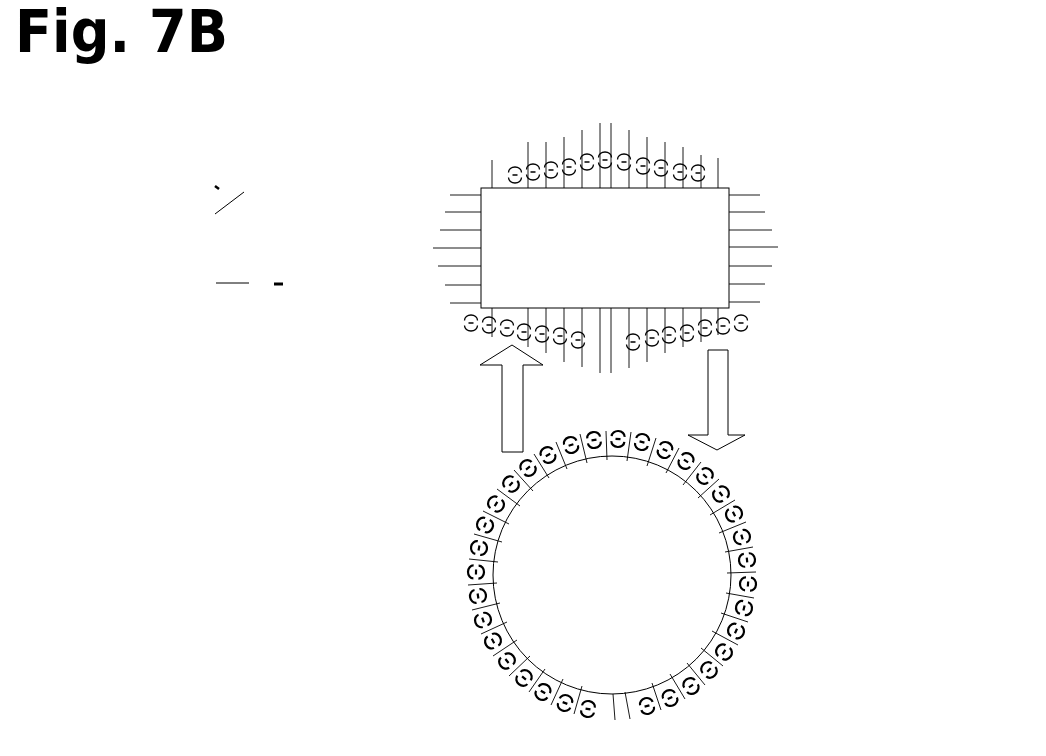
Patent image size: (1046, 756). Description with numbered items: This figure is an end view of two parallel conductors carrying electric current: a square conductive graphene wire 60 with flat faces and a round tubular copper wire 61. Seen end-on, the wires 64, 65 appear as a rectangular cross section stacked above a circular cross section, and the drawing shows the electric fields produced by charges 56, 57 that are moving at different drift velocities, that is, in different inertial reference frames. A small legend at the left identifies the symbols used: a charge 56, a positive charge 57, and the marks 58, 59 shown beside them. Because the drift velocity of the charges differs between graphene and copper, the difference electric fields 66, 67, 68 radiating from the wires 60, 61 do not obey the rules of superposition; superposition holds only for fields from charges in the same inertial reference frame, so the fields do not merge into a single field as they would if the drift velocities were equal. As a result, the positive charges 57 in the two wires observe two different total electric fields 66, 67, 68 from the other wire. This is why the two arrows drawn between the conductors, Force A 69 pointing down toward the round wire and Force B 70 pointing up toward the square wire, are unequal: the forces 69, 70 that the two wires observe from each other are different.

The charge 56 is at (204, 177).
The positive charge 57 is at (289, 183).
The second surface portion 58 is at (206, 288).
The negative charge 59 is at (291, 298).
The square wire 60 is at (736, 185).
The round copper wire 61 is at (759, 501).
The wire end view 64 is at (606, 279).
The wire end view 65 is at (612, 576).
The difference electric field 66 is at (449, 292).
The difference electric field 67 is at (530, 151).
The difference electric field 68 is at (760, 652).
The Force A 69 is at (716, 400).
The Force B 70 is at (511, 398).